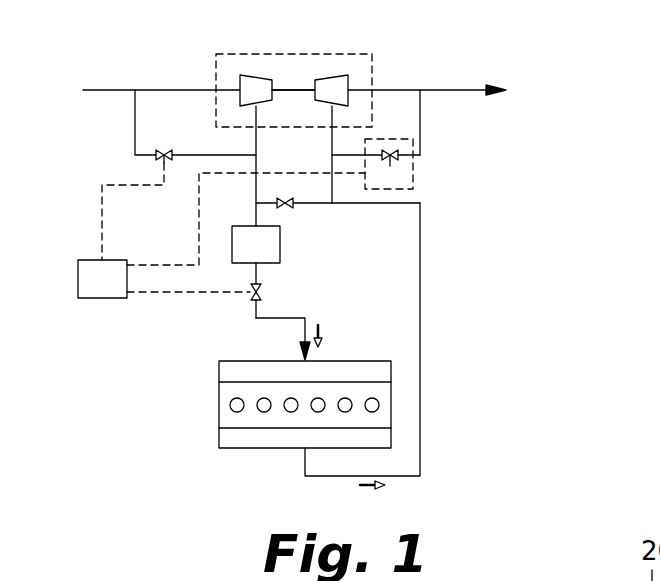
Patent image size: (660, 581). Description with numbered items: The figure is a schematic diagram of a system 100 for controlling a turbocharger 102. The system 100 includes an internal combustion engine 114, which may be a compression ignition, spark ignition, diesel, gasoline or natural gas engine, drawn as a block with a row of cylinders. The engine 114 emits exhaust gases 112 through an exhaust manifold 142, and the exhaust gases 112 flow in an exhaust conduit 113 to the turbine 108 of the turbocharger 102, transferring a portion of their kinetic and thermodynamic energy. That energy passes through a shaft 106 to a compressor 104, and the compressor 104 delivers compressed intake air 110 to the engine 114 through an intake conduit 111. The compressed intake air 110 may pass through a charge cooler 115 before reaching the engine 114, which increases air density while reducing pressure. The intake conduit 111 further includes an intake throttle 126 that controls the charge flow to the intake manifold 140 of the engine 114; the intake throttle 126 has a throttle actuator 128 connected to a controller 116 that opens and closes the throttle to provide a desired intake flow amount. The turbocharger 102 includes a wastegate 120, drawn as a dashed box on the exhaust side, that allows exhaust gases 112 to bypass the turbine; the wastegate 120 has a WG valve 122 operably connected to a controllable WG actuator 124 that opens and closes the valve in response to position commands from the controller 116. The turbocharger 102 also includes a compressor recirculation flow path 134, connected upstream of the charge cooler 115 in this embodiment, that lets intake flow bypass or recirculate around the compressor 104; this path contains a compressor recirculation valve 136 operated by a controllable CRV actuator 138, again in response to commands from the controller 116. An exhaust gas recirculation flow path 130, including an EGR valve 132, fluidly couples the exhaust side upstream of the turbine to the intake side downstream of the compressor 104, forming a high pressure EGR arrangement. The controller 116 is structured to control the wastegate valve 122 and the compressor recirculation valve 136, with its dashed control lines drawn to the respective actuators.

The system 100 is at (600, 124).
The turbocharger 102 is at (216, 62).
The compressor 104 is at (250, 83).
The shaft 106 is at (292, 88).
The turbine 108 is at (340, 80).
The compressed intake air 110 is at (320, 325).
The intake conduit 111 is at (283, 318).
The exhaust gases 112 is at (366, 489).
The exhaust conduit 113 is at (420, 380).
The internal combustion engine 114 is at (219, 415).
The charge cooler 115 is at (272, 258).
The controller 116 is at (118, 293).
The wastegate 120 is at (392, 152).
The WG valve 122 is at (413, 165).
The WG actuator 124 is at (392, 165).
The intake throttle 126 is at (252, 300).
The throttle actuator 128 is at (253, 290).
The EGR flow path 130 is at (314, 214).
The EGR valve 132 is at (292, 208).
The compressor recirculation flow path 134 is at (135, 112).
The compressor recirculation valve 136 is at (160, 163).
The CRV actuator 138 is at (164, 166).
The intake manifold 140 is at (362, 368).
The exhaust manifold 142 is at (273, 440).